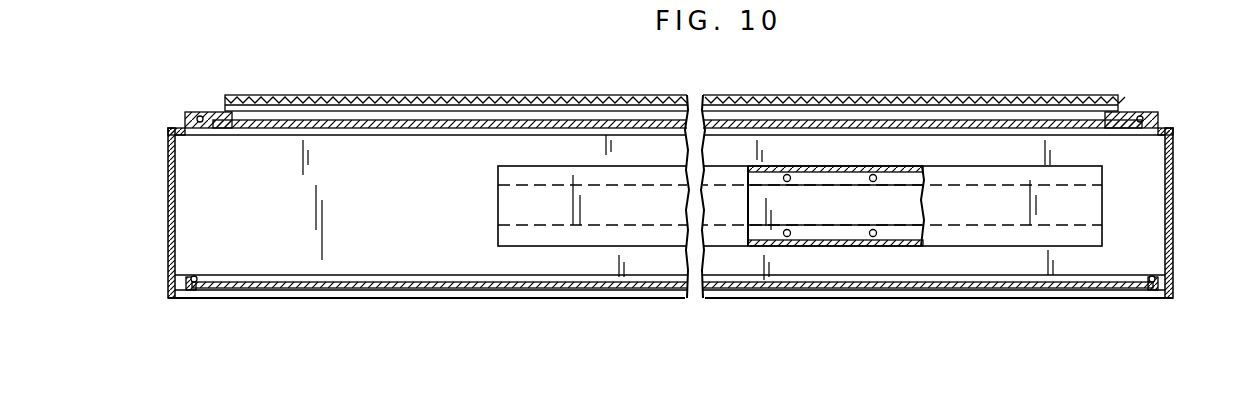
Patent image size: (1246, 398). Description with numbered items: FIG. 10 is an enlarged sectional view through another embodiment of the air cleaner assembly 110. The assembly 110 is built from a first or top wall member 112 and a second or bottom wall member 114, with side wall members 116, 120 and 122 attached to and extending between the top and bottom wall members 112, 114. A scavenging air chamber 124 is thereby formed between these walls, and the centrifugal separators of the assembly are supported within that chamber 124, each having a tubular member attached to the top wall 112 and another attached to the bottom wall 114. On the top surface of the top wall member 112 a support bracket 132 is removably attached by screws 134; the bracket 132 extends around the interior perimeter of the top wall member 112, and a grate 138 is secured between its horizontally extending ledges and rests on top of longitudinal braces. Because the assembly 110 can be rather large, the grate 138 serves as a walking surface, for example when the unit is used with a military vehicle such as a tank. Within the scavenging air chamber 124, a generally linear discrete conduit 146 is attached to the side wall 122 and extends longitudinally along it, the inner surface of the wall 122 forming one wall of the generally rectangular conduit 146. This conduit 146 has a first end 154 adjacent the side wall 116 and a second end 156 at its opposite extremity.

The air cleaner assembly 110 is at (1005, 60).
The top wall member 112 is at (466, 123).
The bottom wall member 114 is at (458, 288).
The side wall member 116 is at (1173, 176).
The side wall member 120 is at (168, 268).
The side wall member 122 is at (426, 238).
The scavenging air chamber 124 is at (417, 264).
The support bracket 132 is at (592, 88).
The screws 134 is at (212, 108).
The grate 138 is at (638, 98).
The conduit 146 is at (520, 194).
The first end 154 is at (1104, 196).
The second end 156 is at (498, 220).